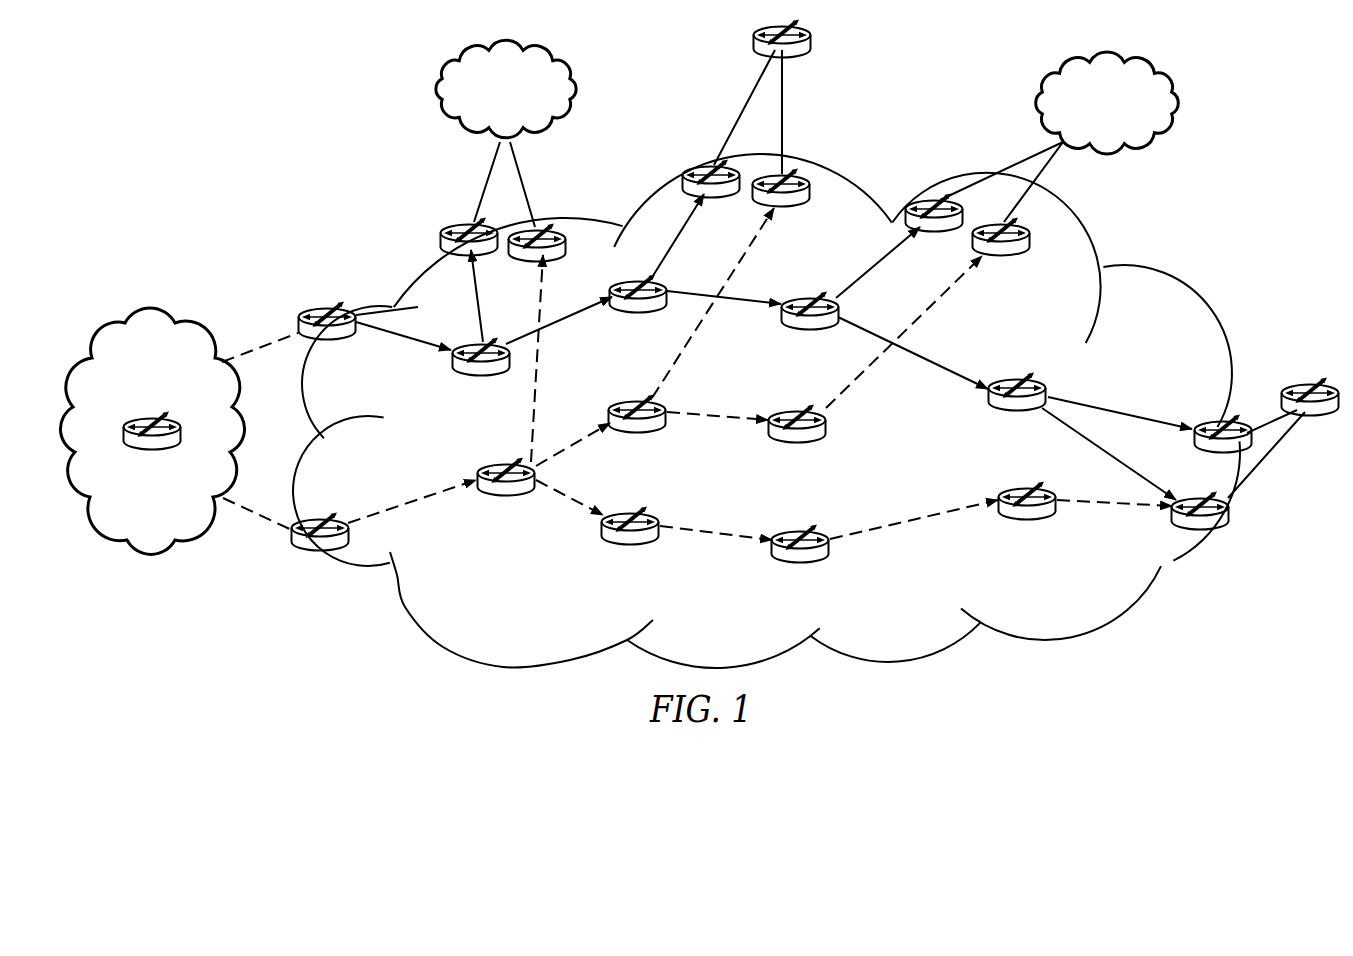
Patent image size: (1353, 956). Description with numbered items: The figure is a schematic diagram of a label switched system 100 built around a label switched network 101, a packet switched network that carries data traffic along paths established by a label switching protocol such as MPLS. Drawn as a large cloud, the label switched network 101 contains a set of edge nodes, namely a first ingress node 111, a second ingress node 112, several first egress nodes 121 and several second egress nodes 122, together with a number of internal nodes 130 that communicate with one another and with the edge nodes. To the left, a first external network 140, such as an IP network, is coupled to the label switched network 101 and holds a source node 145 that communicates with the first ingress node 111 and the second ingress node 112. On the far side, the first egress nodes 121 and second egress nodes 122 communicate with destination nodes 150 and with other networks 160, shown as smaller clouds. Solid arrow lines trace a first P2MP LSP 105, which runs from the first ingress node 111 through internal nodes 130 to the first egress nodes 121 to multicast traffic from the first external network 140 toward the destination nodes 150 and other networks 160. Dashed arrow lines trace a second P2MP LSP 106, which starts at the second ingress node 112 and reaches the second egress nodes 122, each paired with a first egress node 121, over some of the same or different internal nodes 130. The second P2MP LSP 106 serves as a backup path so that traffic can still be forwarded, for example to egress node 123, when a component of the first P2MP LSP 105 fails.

The label switched system 100 is at (256, 124).
The label switched network 101 is at (1183, 279).
The first P2MP LSP 105 is at (464, 304).
The second P2MP LSP 106 is at (522, 406).
The first ingress node 111 is at (334, 339).
The second ingress node 112 is at (332, 515).
The first egress nodes 121 is at (458, 230).
The second egress nodes 122 is at (559, 226).
The egress node 123 is at (1184, 518).
The internal nodes 130 is at (475, 371).
The first external network 140 is at (206, 320).
The source node 145 is at (154, 440).
The destination nodes 150 is at (812, 49).
The other networks 160 is at (807, 97).